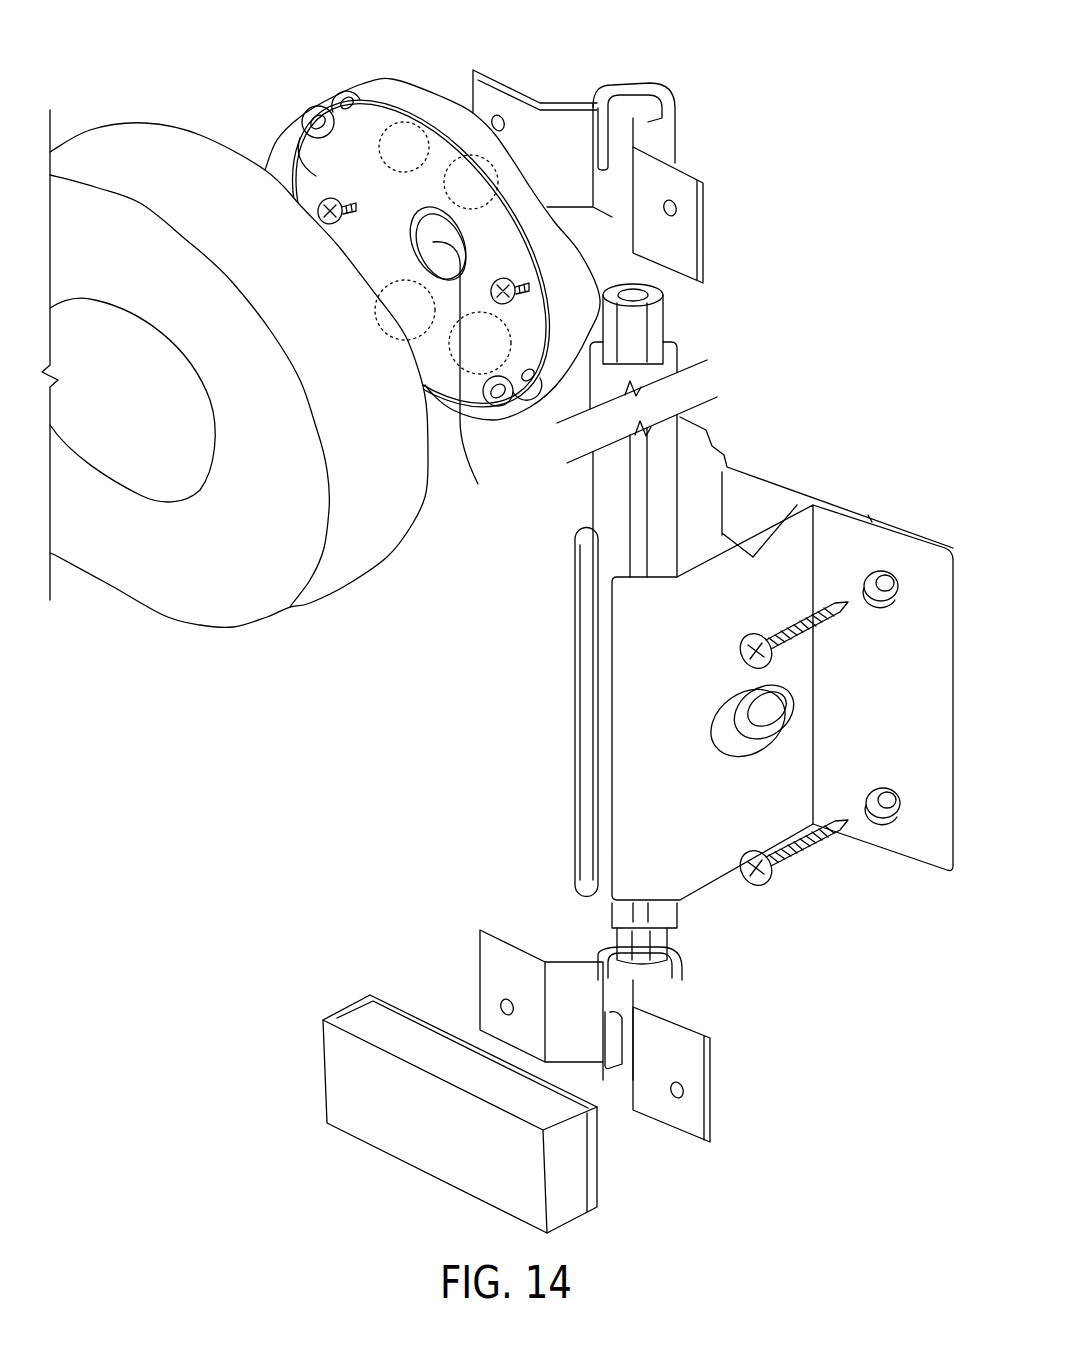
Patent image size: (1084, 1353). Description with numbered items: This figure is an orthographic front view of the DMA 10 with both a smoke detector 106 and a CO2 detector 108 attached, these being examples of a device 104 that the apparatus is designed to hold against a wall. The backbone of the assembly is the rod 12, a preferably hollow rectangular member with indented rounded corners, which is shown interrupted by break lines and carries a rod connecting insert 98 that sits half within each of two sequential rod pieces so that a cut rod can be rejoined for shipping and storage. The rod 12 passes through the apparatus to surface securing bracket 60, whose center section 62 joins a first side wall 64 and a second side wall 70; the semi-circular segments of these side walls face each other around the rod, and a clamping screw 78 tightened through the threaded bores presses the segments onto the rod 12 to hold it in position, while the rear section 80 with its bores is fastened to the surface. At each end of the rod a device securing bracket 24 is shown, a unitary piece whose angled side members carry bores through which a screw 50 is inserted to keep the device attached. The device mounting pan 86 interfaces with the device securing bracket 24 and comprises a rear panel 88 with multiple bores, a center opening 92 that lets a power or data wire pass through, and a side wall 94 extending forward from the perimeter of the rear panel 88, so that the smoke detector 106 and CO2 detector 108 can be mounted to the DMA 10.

The DMA 10 is at (138, 78).
The rod 12 is at (610, 500).
The device securing bracket 24 is at (693, 173).
The screw 50 is at (777, 877).
The apparatus to surface securing bracket 60 is at (787, 505).
The center section 62 is at (682, 594).
The first side wall 64 is at (673, 840).
The second side wall 70 is at (718, 475).
The clamping screw 78 is at (767, 723).
The rear section 80 is at (872, 508).
The device mounting pan 86 is at (427, 85).
The rear panel 88 is at (316, 176).
The center opening 92 is at (449, 359).
The side wall 94 is at (393, 97).
The rod connecting insert 98 is at (653, 323).
The device 104 is at (323, 678).
The smoke detector 106 is at (152, 557).
The CO2 detector 108 is at (357, 1100).